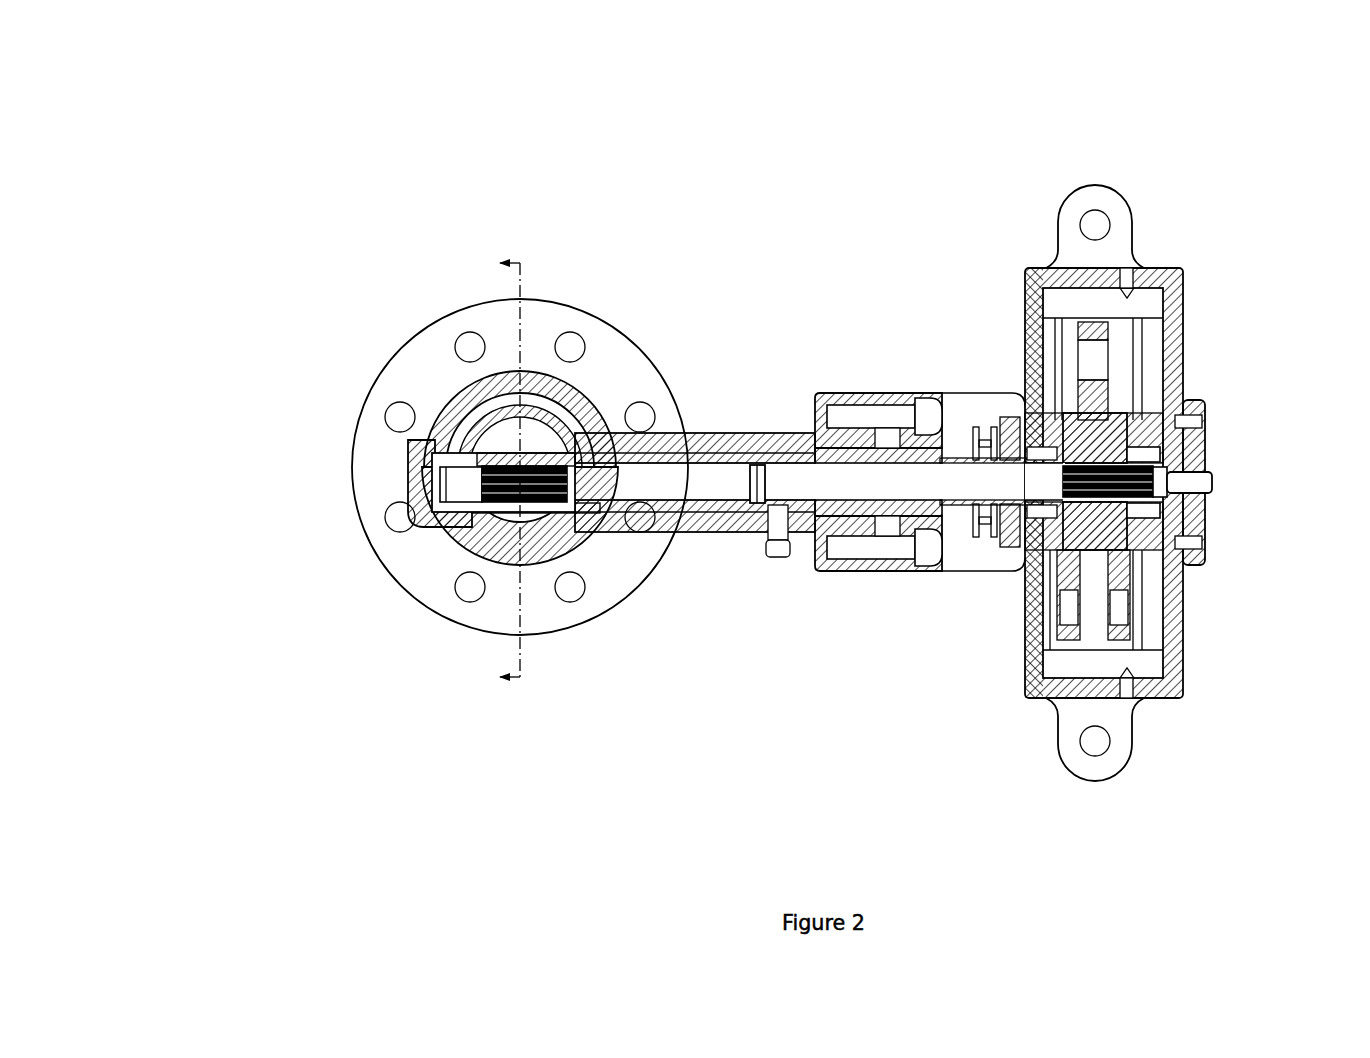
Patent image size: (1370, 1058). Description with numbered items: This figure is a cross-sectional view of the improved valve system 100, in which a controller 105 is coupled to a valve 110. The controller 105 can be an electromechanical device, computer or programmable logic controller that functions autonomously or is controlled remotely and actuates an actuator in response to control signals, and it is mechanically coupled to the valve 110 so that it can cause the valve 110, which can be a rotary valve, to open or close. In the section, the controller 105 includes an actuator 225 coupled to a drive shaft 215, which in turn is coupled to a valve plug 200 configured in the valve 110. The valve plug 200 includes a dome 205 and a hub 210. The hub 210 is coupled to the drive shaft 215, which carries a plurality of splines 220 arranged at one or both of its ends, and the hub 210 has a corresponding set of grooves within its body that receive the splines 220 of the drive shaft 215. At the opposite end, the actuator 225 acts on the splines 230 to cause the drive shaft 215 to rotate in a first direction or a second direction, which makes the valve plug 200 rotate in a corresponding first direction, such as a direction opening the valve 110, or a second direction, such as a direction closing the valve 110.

The valve system 100 is at (268, 95).
The controller 105 is at (1141, 479).
The valve 110 is at (430, 320).
The valve plug 200 is at (519, 455).
The dome 205 is at (495, 436).
The hub 210 is at (489, 457).
The drive shaft 215 is at (852, 490).
The splines 220 is at (480, 483).
The actuator 225 is at (1138, 458).
The splines 230 is at (1155, 483).